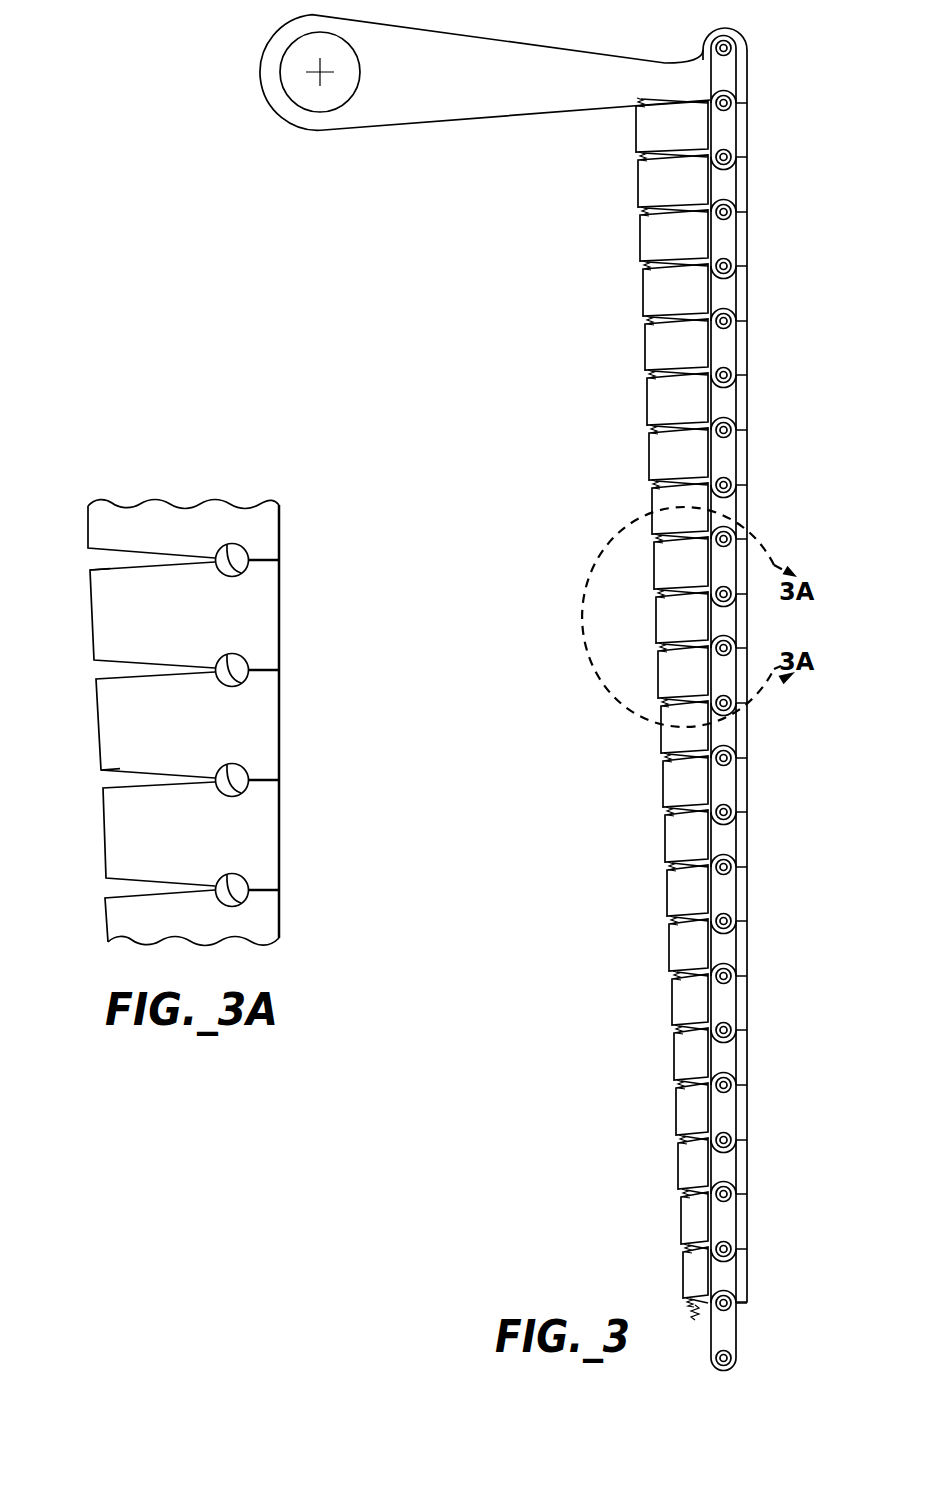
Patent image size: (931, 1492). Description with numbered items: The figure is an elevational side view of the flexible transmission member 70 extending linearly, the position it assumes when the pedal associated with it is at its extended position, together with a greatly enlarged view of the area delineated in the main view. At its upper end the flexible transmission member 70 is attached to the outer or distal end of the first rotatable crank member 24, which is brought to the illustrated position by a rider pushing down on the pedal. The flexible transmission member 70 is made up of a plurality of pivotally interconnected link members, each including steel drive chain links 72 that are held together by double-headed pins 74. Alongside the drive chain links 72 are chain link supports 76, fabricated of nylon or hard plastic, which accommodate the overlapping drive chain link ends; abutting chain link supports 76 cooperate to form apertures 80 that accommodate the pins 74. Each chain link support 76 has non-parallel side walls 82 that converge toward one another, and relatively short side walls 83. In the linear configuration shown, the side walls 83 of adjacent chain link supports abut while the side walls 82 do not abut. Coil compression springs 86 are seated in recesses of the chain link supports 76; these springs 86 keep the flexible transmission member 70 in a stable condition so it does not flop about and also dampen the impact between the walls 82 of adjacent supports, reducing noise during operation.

In FIG. 3, the first rotatable crank member 24 is at (400, 118).
In FIG. 3, the flexible transmission member 70 is at (762, 283).
In FIG. 3A, the flexible transmission member 70 is at (291, 621).
In FIG. 3, the drive chain links 72 is at (726, 72).
In FIG. 3, the double-headed pins 74 is at (724, 977).
In FIG. 3, the chain link supports 76 is at (648, 131).
In FIG. 3A, the chain link supports 76 is at (105, 527).
In FIG. 3A, the apertures 80 is at (240, 574).
In FIG. 3A, the non-parallel side walls 82 is at (90, 568).
In FIG. 3A, the relatively short side walls 83 is at (262, 556).
In FIG. 3, the coil compression springs 86 is at (642, 157).